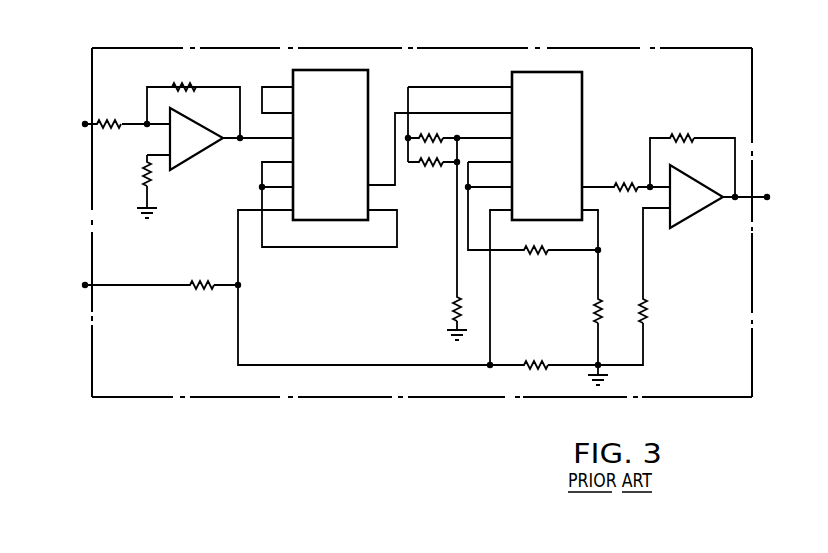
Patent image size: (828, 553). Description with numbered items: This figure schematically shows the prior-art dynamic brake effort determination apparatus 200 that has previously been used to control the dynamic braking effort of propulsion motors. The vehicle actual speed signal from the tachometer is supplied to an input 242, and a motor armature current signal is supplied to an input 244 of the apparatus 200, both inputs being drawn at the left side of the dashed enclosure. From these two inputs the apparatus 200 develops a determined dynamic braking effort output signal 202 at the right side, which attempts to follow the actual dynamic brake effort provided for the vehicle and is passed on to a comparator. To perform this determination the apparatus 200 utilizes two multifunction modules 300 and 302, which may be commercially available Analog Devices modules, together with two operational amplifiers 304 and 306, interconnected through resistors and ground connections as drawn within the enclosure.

The dynamic brake effort determination apparatus 200 is at (368, 47).
The estimated dynamic braking effort signal 202 is at (767, 200).
The input 242 is at (84, 130).
The input 244 is at (84, 293).
The multifunction module 300 is at (369, 103).
The multifunction module 302 is at (583, 95).
The operational amplifier 304 is at (204, 152).
The operational amplifier 306 is at (688, 223).